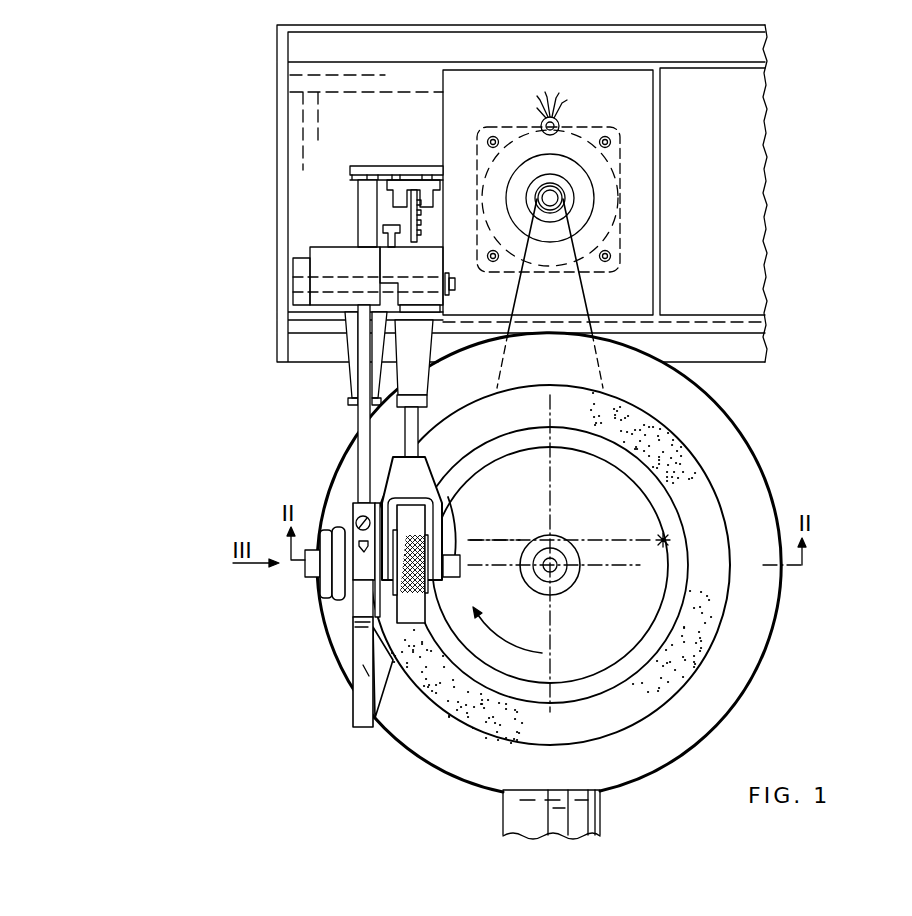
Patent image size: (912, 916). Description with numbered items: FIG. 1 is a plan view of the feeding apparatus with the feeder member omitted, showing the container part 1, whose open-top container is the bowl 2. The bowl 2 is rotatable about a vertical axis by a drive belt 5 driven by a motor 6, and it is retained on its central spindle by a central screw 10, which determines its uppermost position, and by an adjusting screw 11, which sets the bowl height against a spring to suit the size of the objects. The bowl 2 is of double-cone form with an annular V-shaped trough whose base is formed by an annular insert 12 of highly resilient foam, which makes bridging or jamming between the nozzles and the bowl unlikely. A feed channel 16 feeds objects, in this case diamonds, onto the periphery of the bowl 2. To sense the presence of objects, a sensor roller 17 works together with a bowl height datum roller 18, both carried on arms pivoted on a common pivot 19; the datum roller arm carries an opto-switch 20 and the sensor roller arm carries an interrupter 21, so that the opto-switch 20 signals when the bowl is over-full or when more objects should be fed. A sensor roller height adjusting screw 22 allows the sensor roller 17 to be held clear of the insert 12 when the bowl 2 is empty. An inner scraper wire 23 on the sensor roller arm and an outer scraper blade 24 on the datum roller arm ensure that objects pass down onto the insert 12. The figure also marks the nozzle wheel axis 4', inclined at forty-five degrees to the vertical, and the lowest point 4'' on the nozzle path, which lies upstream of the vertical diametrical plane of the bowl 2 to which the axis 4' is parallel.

The container part 1 is at (412, 757).
The bowl 2 is at (337, 632).
The axis of the nozzle wheel 4' is at (539, 512).
The lowest point on the path of the nozzles 4'' is at (681, 521).
The drive belt 5 is at (587, 296).
The motor 6 is at (578, 147).
The central screw 10 is at (547, 585).
The adjusting screw 11 is at (578, 586).
The annular insert 12 is at (473, 715).
The feed channel 16 is at (575, 818).
The sensor roller 17 is at (413, 513).
The bowl height datum roller 18 is at (327, 598).
The common pivot 19 is at (458, 283).
The opto-switch 20 is at (418, 166).
The interrupter 21 is at (410, 212).
The sensor roller height adjusting screw 22 is at (387, 230).
The inner scraper wire 23 is at (457, 526).
The outer scraper blade 24 is at (357, 680).